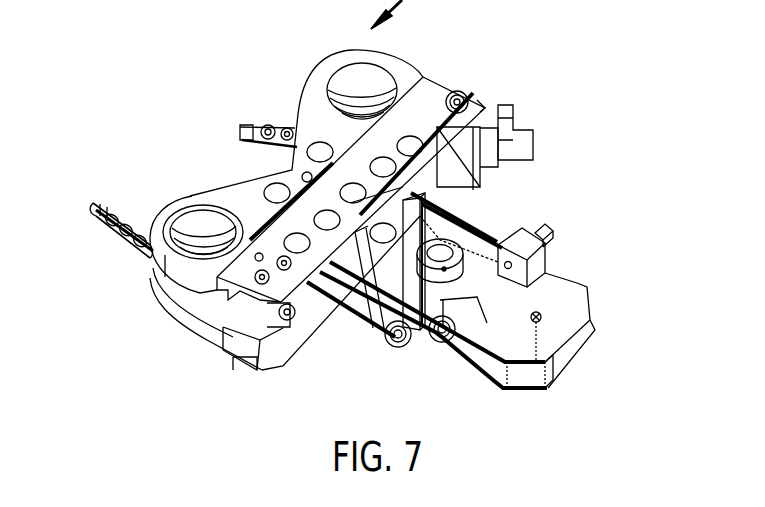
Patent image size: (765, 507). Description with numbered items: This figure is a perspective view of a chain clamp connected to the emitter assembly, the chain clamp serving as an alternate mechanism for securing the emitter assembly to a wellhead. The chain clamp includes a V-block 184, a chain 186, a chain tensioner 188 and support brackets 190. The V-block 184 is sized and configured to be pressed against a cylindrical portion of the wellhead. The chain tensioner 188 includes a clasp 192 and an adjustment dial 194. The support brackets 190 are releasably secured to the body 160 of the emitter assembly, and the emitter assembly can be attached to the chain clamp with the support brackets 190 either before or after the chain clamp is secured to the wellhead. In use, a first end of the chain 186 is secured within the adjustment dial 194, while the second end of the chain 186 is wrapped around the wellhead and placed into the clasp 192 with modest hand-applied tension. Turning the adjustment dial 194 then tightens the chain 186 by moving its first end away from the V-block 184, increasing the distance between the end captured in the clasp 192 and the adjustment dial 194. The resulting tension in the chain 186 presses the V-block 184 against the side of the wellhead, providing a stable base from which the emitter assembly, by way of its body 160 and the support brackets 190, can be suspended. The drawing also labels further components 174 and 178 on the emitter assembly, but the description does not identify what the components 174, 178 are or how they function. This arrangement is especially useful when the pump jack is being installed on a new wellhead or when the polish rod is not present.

The body 160 is at (562, 292).
The terminal block 174 is at (515, 242).
The electrical leads 178 is at (420, 215).
The V-block 184 is at (237, 192).
The chain 186 is at (113, 227).
The chain tensioner 188 is at (485, 95).
The support brackets 190 is at (368, 307).
The clasp 192 is at (270, 313).
The adjustment dial 194 is at (530, 136).